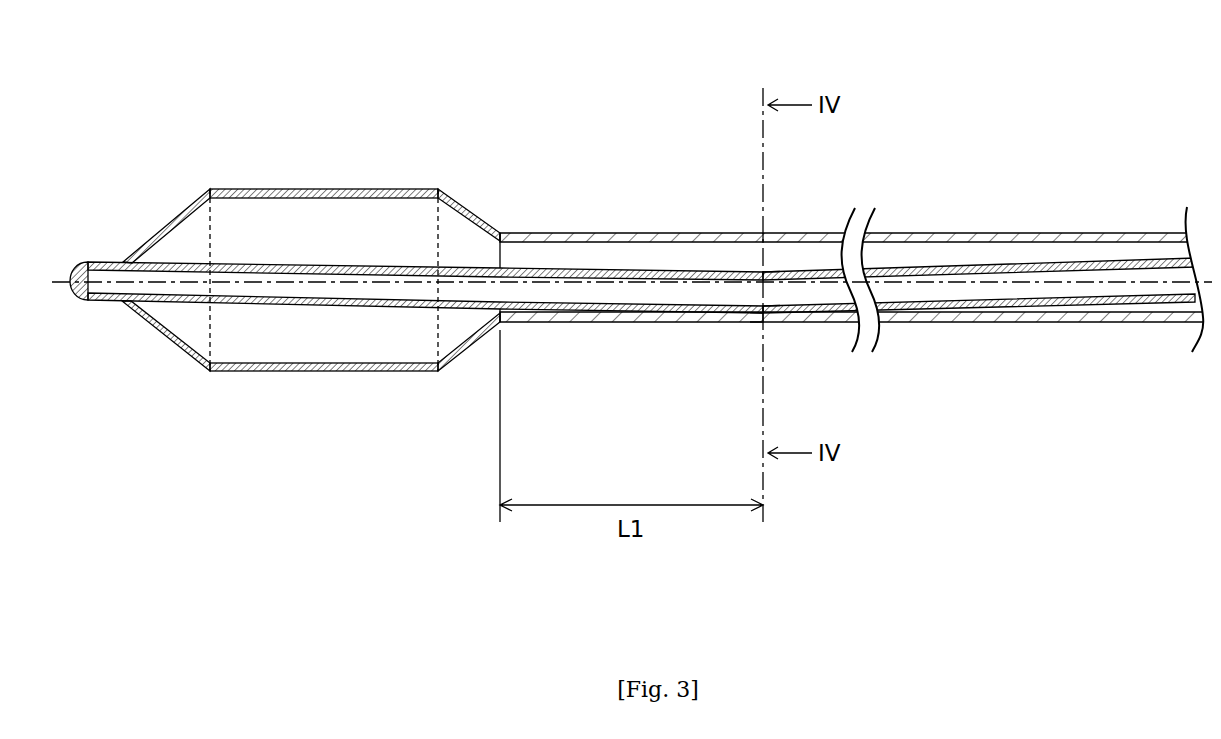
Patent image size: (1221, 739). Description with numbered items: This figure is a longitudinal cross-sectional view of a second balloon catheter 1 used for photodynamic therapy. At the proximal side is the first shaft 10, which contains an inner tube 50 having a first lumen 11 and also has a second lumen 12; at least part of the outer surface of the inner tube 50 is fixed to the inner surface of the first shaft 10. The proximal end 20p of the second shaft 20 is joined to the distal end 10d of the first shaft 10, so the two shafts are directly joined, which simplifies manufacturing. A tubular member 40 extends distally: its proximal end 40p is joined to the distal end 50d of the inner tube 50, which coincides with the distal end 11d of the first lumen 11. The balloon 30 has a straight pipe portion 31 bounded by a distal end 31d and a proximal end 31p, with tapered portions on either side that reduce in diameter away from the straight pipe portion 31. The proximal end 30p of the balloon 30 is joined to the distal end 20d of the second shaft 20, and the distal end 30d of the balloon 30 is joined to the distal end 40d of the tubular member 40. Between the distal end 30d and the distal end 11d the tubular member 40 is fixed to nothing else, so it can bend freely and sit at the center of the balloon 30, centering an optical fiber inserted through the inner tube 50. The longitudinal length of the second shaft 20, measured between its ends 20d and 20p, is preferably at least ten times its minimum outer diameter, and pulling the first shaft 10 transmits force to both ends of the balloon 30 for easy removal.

The balloon catheter 1 is at (130, 125).
The first shaft 10 is at (956, 282).
The distal end of the first shaft 10d is at (760, 233).
The first lumen 11 is at (979, 284).
The distal end of the first lumen 11d is at (766, 262).
The second lumen 12 is at (1137, 242).
The second shaft 20 is at (680, 268).
The distal end of the second shaft 20d is at (502, 322).
The proximal end of the second shaft 20p is at (760, 322).
The balloon 30 is at (316, 281).
The distal end of the balloon 30d is at (120, 260).
The proximal end of the balloon 30p is at (500, 233).
The straight pipe portion 31 is at (315, 330).
The distal end of the straight pipe portion 31d is at (212, 375).
The proximal end of the straight pipe portion 31p is at (454, 330).
The tubular member 40 is at (442, 291).
The distal end of the tubular member 40d is at (68, 275).
The proximal end of the tubular member 40p is at (768, 322).
The inner tube 50 is at (1012, 322).
The distal end of the inner tube 50d is at (814, 245).